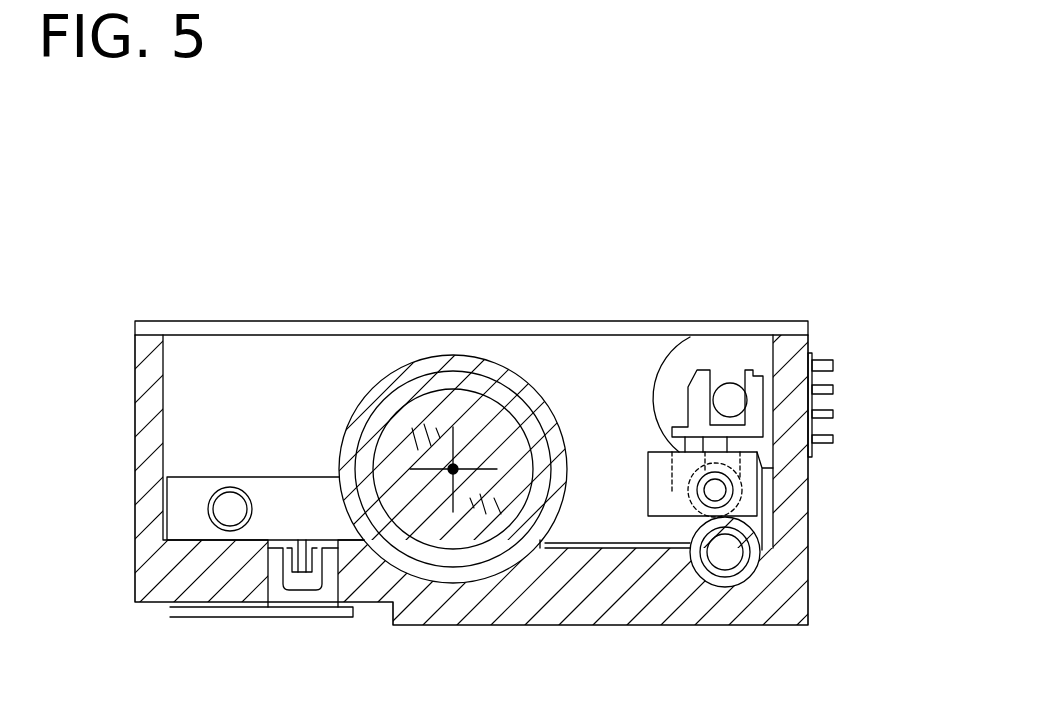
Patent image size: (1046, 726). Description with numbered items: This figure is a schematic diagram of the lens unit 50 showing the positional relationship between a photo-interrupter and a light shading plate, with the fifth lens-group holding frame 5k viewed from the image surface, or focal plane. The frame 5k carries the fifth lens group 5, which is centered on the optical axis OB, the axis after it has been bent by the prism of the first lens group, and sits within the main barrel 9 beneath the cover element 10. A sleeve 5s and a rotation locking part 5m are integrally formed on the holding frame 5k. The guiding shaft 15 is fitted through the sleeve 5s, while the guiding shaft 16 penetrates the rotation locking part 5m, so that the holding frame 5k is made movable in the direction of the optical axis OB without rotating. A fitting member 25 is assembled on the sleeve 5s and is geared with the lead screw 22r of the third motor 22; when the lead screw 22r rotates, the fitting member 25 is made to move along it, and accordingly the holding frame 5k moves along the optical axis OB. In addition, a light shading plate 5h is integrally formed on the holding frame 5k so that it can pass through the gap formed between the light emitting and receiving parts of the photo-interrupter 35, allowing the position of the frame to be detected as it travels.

The lens unit 50 is at (279, 306).
The fifth lens group 5 is at (427, 412).
The fifth lens-group holding frame 5k is at (458, 363).
The cover element 10 is at (553, 321).
The lead screw 22r is at (725, 388).
The third motor 22 is at (738, 358).
The optical axis OB is at (453, 469).
The light shading plate 5h is at (302, 540).
The rotation locking part 5m is at (178, 512).
The guiding shaft 16 is at (223, 513).
The photo-interrupter 35 is at (318, 597).
The main barrel 9 is at (555, 607).
The guiding shaft 15 is at (722, 558).
The fitting member 25 is at (752, 433).
The sleeve 5s is at (750, 557).